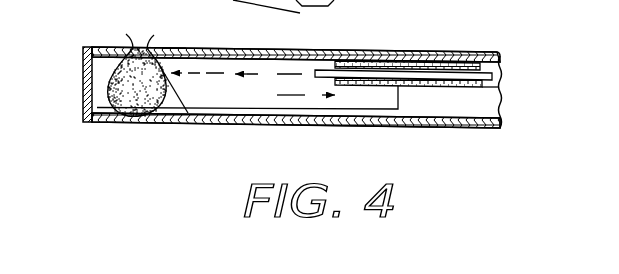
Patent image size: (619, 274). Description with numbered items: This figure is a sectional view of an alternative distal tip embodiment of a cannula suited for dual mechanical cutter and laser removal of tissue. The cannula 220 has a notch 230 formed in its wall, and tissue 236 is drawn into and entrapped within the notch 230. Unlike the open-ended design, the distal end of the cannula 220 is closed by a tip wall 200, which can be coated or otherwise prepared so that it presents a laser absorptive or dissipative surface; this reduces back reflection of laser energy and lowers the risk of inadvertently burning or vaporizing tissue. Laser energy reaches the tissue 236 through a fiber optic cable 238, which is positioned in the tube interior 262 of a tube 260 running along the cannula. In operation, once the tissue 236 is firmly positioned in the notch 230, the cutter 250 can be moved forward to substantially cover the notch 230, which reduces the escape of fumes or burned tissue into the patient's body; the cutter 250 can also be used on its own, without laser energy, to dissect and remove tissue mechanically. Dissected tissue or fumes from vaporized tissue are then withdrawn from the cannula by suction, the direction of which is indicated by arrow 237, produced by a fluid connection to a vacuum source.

The tip wall 200 is at (83, 103).
The cannula 220 is at (384, 48).
The notch 230 is at (172, 47).
The tissue 236 is at (122, 83).
The arrow indicating suction 237 is at (307, 97).
The fiber optic cable 238 is at (489, 78).
The cutter 250 is at (272, 72).
The tube 260 is at (455, 62).
The tube interior 262 is at (508, 78).